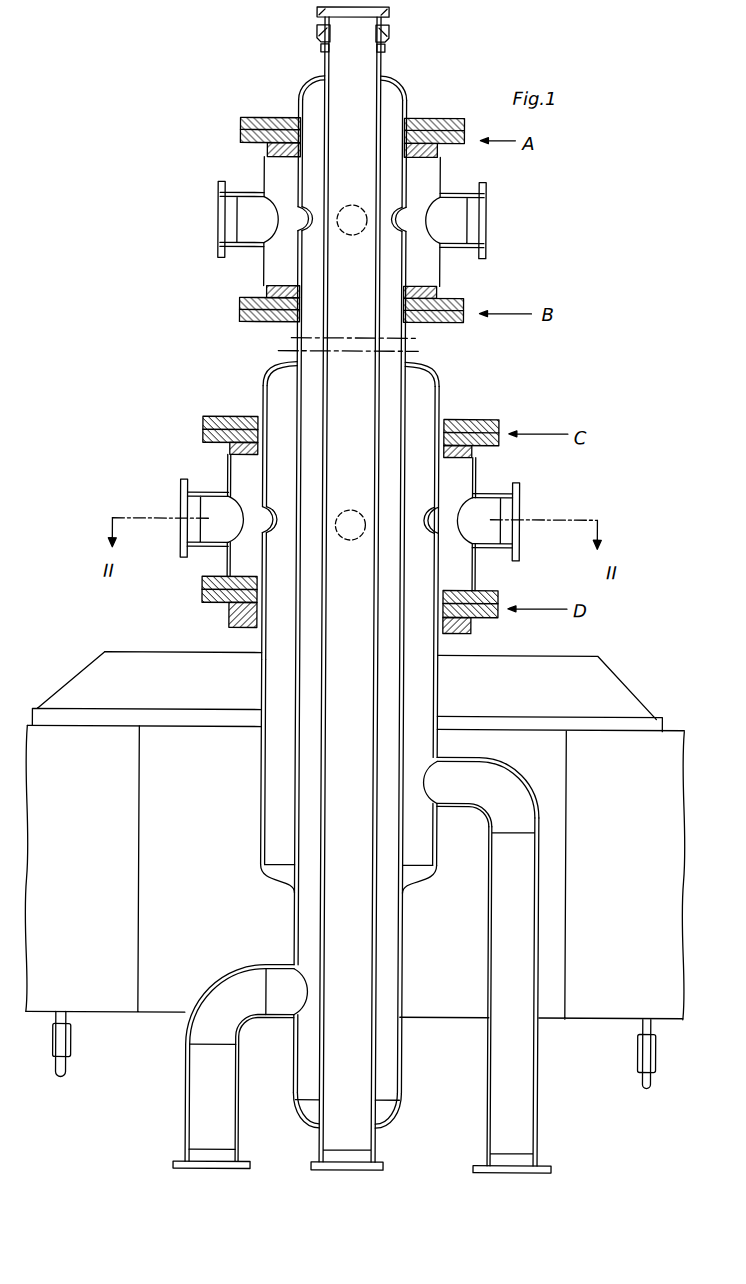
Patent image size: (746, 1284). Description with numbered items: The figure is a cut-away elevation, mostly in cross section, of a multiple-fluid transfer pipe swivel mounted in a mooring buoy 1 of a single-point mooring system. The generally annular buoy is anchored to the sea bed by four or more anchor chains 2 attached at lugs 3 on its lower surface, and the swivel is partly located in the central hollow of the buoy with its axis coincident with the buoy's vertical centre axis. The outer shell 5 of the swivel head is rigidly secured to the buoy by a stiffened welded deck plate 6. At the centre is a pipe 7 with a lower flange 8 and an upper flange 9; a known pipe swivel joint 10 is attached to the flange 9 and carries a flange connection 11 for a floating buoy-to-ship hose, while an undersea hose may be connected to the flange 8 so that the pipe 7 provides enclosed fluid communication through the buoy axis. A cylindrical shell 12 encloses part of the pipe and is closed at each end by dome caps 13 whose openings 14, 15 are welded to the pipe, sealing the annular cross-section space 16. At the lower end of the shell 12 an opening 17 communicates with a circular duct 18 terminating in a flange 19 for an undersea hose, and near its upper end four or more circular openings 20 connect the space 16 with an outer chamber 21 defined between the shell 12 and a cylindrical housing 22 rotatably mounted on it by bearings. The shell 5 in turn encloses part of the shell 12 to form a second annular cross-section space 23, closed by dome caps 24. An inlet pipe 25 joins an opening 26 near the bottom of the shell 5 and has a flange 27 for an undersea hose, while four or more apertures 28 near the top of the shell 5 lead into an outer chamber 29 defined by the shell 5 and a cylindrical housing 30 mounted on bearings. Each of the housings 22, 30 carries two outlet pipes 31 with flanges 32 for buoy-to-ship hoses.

The mooring buoy 1 is at (355, 835).
The anchor chains 2 is at (73, 1052).
The lugs 3 is at (67, 1020).
The outer shell 5 is at (262, 682).
The deck plate 6 is at (190, 720).
The pipe 7 is at (327, 370).
The flange 8 is at (384, 1164).
The flange 9 is at (383, 42).
The pipe swivel joint 10 is at (387, 28).
The flange connection 11 is at (390, 12).
The cylindrical shell 12 is at (300, 97).
The dome caps 13 is at (407, 95).
The opening 14 is at (315, 1128).
The opening 15 is at (325, 82).
The annular cross-section space 16 is at (390, 407).
The opening 17 is at (302, 987).
The duct 18 is at (215, 1008).
The flange 19 is at (188, 1158).
The openings 20 is at (303, 222).
The outer chamber 21 is at (432, 170).
The cylindrical housing 22 is at (443, 270).
The second annular cross-section space 23 is at (283, 392).
The dome caps 24 is at (420, 373).
The inlet pipe 25 is at (484, 991).
The opening 26 is at (428, 782).
The flange 27 is at (540, 1162).
The apertures 28 is at (233, 512).
The outer chamber 29 is at (227, 473).
The cylindrical housing 30 is at (480, 467).
The outlet pipes 31 is at (245, 193).
The flanges 32 is at (220, 188).